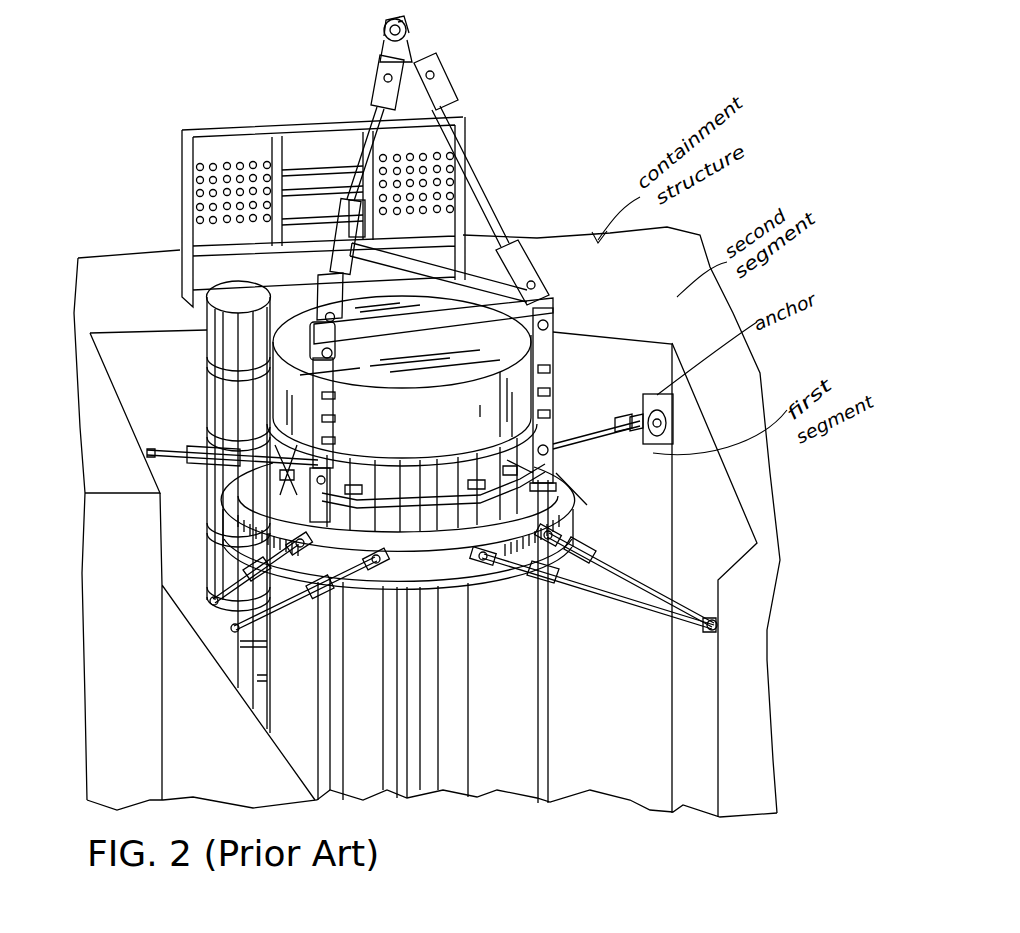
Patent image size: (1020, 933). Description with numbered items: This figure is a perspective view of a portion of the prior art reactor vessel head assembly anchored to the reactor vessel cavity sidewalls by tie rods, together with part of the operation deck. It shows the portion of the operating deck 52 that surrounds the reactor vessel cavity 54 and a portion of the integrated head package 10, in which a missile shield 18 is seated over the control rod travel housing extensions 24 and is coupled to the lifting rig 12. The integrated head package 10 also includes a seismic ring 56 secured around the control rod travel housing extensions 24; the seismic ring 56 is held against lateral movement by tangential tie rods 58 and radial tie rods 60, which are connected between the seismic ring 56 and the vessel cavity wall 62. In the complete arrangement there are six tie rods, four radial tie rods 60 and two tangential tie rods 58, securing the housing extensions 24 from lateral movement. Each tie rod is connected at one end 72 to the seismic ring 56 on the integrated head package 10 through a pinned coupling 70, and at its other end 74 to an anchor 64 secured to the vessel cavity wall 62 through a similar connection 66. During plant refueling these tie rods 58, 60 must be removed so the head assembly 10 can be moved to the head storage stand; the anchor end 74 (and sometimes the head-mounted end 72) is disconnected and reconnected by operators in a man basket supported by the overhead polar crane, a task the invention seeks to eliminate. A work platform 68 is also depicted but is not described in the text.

The integrated head package 10 is at (511, 347).
The lifting rig 12 is at (497, 184).
The missile shield 18 is at (427, 434).
The control rod travel housing extensions 24 is at (467, 697).
The operating deck 52 is at (740, 434).
The reactor vessel cavity 54 is at (624, 724).
The seismic ring 56 is at (577, 520).
The tangential tie rods 58 is at (618, 603).
The radial tie rods 60 is at (600, 433).
The vessel cavity wall 62 is at (728, 527).
The anchor 64 is at (666, 396).
The connection 66 is at (668, 418).
The work platform 68 is at (227, 130).
The pinned coupling 70 is at (480, 562).
The tie rod end 72 is at (593, 547).
The tie rod end 74 is at (637, 430).